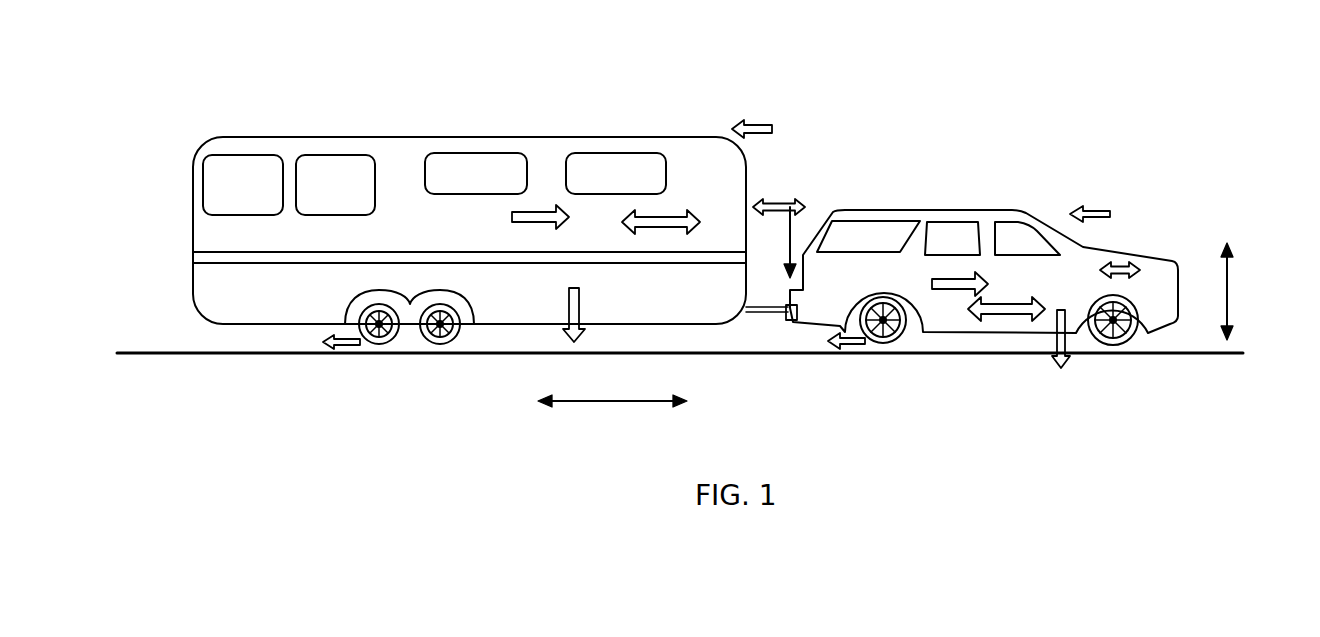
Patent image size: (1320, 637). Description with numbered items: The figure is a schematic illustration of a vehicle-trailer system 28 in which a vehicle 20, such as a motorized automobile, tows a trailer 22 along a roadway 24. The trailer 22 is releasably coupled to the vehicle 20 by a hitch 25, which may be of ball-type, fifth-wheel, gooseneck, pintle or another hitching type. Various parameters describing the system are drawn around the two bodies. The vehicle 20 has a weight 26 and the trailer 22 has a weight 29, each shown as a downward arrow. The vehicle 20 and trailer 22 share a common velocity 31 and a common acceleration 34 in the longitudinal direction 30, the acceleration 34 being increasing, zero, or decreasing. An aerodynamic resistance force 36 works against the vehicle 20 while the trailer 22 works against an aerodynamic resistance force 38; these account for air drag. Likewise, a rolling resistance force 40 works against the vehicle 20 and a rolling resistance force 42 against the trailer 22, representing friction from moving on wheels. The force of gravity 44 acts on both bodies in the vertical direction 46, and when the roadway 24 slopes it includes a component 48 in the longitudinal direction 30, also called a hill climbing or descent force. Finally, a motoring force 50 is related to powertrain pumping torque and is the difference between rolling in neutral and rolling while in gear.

The vehicle 20 is at (956, 213).
The trailer 22 is at (617, 136).
The roadway 24 is at (177, 352).
The hitch 25 is at (792, 322).
The vehicle weight 26 is at (1070, 338).
The vehicle-trailer system 28 is at (842, 79).
The trailer weight 29 is at (583, 312).
The longitudinal direction 30 is at (607, 402).
The velocity 31 is at (535, 226).
The acceleration 34 is at (662, 228).
The aerodynamic resistance force 36 is at (1095, 205).
The aerodynamic resistance force 38 is at (756, 122).
The rolling resistance force 40 is at (860, 355).
The rolling resistance force 42 is at (345, 353).
The force of gravity 44 is at (795, 223).
The vertical direction 46 is at (1229, 290).
The gravity force component 48 is at (778, 205).
The motoring force 50 is at (1120, 262).